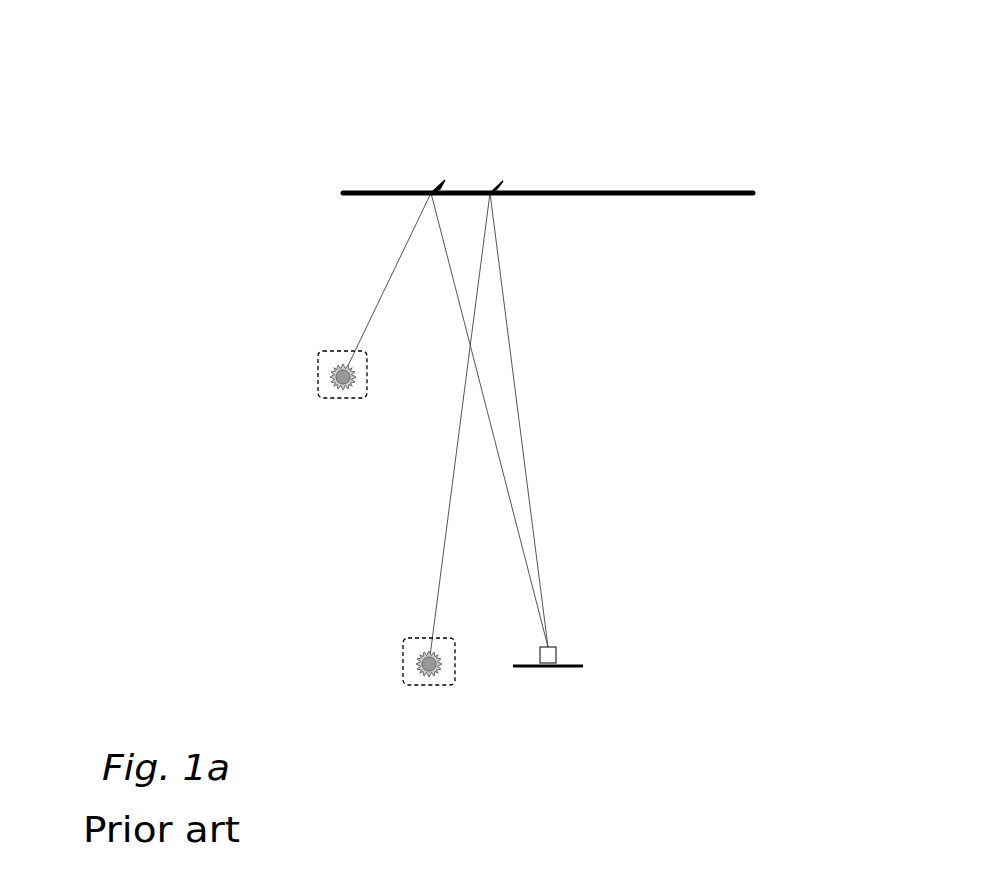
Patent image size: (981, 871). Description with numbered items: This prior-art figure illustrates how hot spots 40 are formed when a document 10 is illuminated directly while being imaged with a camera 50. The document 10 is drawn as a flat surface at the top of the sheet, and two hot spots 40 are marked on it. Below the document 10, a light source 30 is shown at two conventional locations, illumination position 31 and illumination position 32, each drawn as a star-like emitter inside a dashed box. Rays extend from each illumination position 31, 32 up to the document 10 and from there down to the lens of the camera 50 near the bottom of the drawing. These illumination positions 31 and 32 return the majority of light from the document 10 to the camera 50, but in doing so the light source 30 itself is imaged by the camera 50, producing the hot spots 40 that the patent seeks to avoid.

The document 10 is at (377, 191).
The hot spots 40 is at (440, 187).
The light source 30 is at (343, 375).
The illumination position 31 is at (307, 404).
The illumination position 32 is at (413, 690).
The camera 50 is at (553, 658).